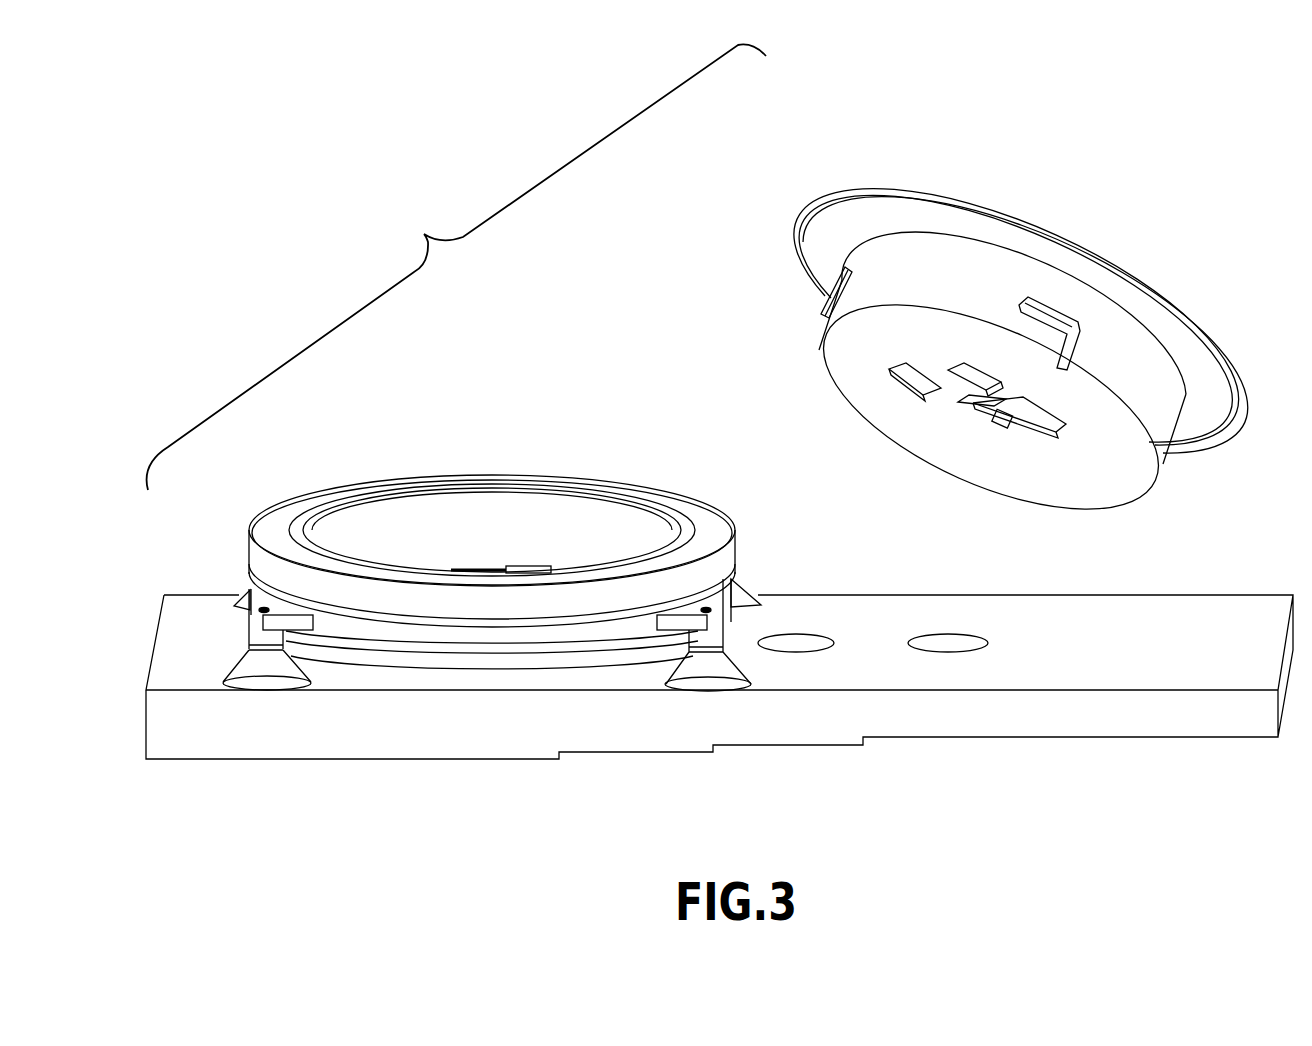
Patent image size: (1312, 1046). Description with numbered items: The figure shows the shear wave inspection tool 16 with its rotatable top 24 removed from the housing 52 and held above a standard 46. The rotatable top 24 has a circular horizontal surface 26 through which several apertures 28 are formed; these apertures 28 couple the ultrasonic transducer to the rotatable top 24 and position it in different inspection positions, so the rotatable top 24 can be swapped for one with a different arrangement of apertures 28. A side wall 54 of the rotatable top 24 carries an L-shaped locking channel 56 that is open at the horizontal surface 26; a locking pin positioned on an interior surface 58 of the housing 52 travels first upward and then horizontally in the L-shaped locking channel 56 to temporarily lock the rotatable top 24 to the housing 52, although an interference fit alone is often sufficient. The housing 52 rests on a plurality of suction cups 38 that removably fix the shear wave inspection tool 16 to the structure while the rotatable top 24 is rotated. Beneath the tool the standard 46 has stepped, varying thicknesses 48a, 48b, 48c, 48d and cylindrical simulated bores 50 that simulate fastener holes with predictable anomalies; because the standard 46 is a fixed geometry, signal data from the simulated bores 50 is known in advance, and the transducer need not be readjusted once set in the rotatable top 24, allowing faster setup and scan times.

The shear wave inspection tool 16 is at (456, 267).
The rotatable top 24 is at (930, 193).
The horizontal surface 26 is at (1060, 462).
The apertures 28 is at (990, 420).
The suction cups 38 is at (240, 668).
The standards 46 is at (1242, 642).
The thickness 48a is at (323, 622).
The thickness 48b is at (640, 622).
The thickness 48c is at (787, 627).
The thickness 48d is at (1070, 627).
The simulated bores 50 is at (930, 642).
The housing 52 is at (340, 483).
The side wall 54 is at (988, 273).
The L-shaped locking channel 56 is at (826, 292).
The interior surface 58 is at (465, 523).